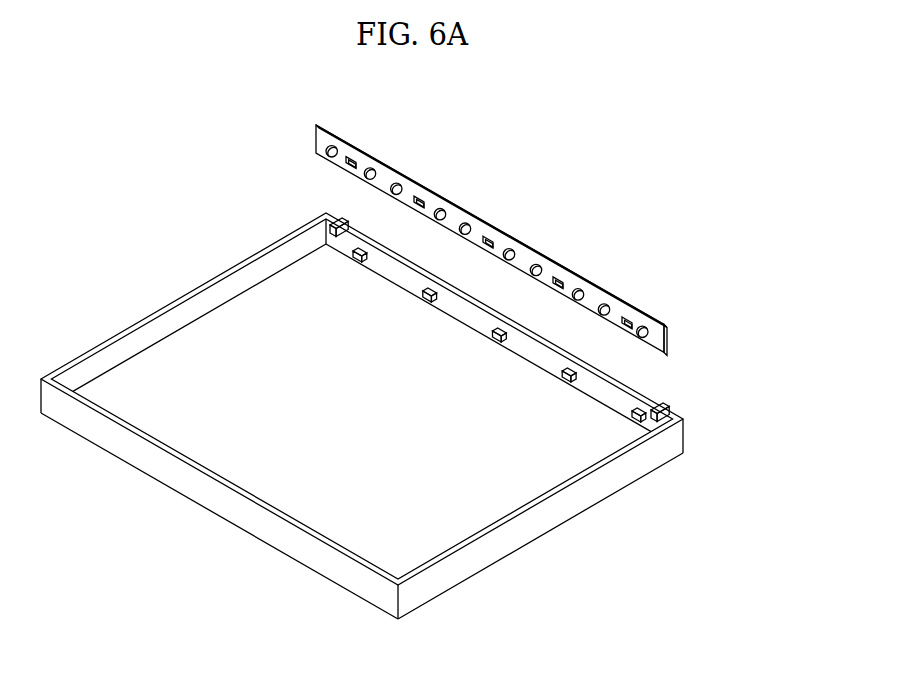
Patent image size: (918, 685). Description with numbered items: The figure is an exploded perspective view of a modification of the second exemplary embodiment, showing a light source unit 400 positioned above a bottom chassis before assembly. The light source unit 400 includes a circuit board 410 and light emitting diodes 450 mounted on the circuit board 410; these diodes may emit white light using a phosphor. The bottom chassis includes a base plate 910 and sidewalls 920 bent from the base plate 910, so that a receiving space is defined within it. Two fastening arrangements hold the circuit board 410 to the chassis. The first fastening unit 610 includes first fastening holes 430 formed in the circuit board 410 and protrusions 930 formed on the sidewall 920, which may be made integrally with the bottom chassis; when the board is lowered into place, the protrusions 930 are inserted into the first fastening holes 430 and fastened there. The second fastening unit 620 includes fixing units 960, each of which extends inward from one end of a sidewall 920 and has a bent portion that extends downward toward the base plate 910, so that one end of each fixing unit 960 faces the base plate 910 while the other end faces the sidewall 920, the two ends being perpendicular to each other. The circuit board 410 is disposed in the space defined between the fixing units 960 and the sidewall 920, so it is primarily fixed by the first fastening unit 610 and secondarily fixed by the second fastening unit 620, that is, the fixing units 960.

The light source unit 400 is at (548, 219).
The circuit board 410 is at (367, 151).
The first fastening holes 430 is at (417, 194).
The light emitting diodes 450 is at (466, 223).
The base plate 910 is at (258, 453).
The sidewalls 920 is at (247, 513).
The protrusions 930 is at (497, 333).
The fixing units 960 is at (338, 218).
The first fastening unit 610 is at (549, 381).
The second fastening unit 620 is at (461, 422).